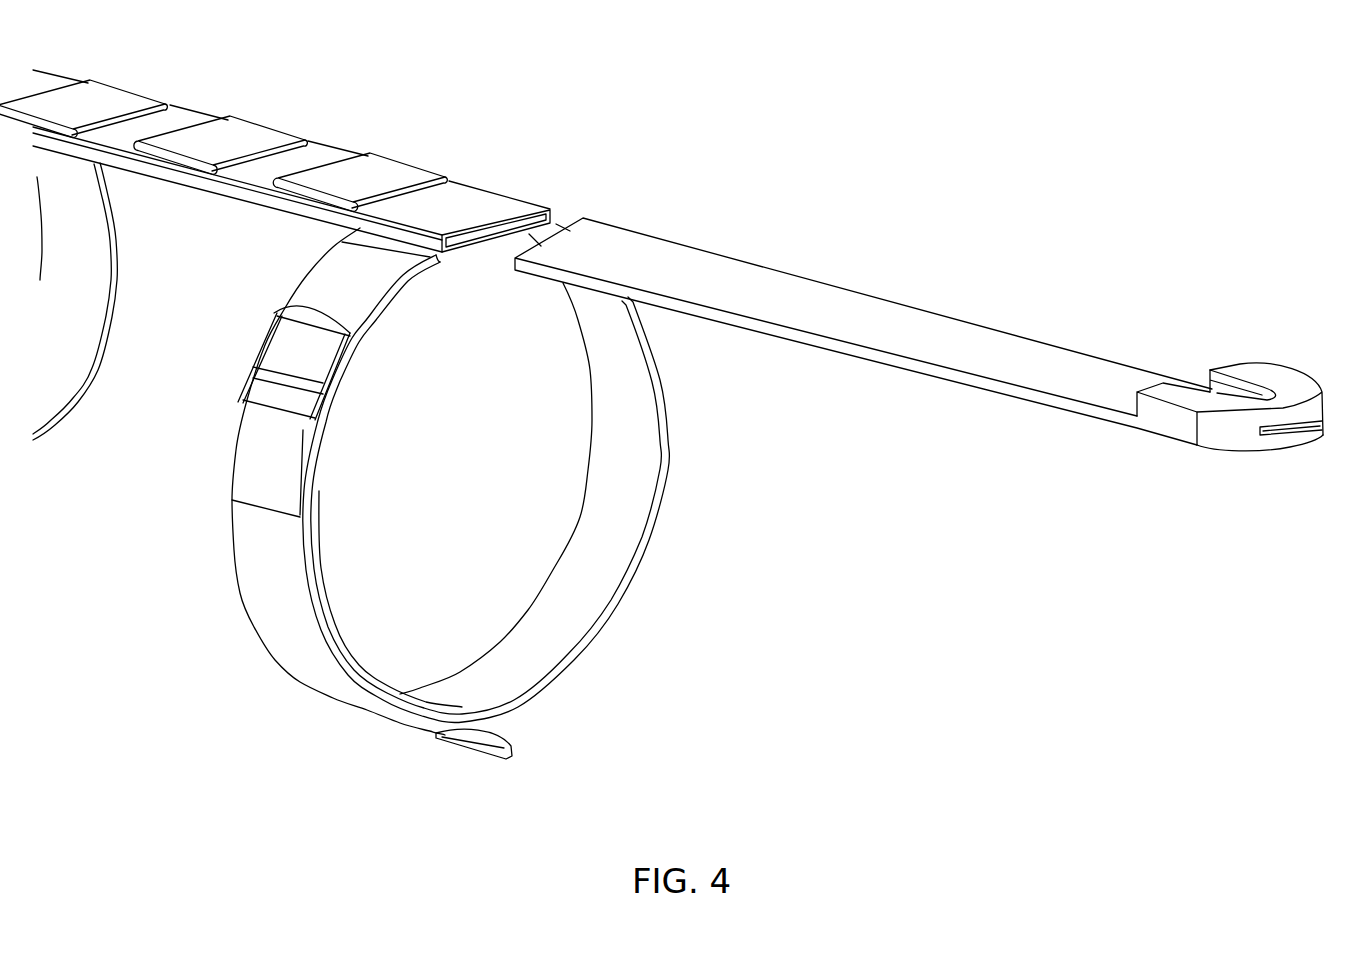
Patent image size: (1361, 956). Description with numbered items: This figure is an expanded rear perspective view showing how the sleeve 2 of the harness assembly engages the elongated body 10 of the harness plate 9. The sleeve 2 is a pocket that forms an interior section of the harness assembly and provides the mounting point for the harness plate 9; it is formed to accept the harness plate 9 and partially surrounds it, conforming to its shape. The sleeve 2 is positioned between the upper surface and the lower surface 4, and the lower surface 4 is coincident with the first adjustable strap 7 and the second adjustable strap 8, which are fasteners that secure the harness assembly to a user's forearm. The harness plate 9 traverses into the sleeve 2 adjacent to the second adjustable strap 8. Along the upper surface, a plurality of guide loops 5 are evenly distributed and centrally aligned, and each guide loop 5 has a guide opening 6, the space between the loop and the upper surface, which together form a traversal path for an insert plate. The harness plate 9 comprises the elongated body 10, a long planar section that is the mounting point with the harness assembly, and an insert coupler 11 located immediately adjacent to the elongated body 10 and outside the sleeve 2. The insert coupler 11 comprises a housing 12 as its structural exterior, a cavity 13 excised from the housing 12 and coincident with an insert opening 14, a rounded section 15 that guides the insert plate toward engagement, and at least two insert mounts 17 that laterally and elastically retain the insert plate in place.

The sleeve 2 is at (562, 216).
The lower surface 4 is at (253, 207).
The guide loop 5 is at (160, 100).
The guide opening 6 is at (118, 116).
The first adjustable strap 7 is at (110, 318).
The second adjustable strap 8 is at (670, 465).
The harness plate 9 is at (934, 344).
The elongated body 10 is at (790, 304).
The insert coupler 11 is at (1275, 356).
The housing 12 is at (1162, 440).
The cavity 13 is at (1244, 380).
The insert opening 14 is at (1290, 440).
The rounded section 15 is at (1235, 452).
The insert mount 17 is at (1260, 430).